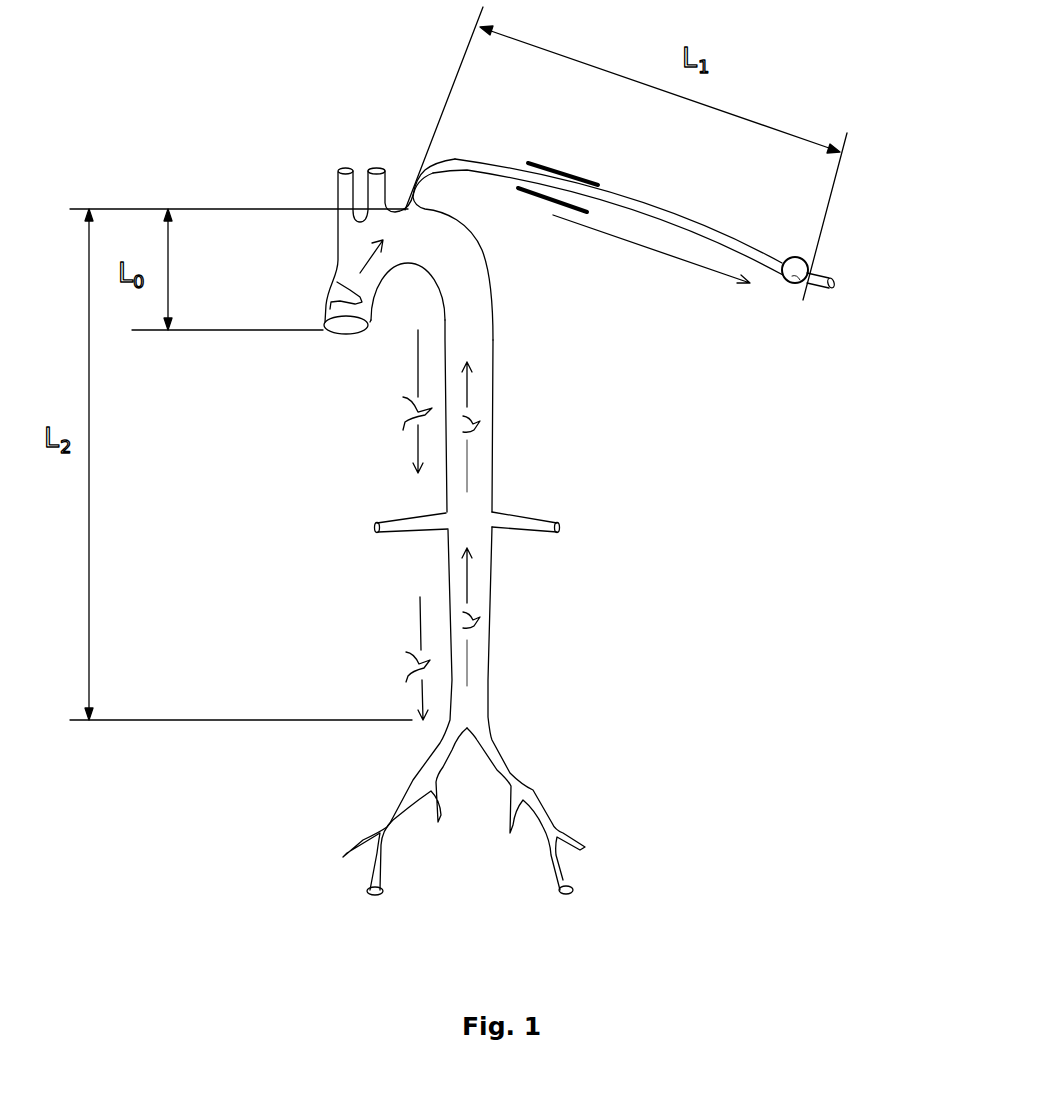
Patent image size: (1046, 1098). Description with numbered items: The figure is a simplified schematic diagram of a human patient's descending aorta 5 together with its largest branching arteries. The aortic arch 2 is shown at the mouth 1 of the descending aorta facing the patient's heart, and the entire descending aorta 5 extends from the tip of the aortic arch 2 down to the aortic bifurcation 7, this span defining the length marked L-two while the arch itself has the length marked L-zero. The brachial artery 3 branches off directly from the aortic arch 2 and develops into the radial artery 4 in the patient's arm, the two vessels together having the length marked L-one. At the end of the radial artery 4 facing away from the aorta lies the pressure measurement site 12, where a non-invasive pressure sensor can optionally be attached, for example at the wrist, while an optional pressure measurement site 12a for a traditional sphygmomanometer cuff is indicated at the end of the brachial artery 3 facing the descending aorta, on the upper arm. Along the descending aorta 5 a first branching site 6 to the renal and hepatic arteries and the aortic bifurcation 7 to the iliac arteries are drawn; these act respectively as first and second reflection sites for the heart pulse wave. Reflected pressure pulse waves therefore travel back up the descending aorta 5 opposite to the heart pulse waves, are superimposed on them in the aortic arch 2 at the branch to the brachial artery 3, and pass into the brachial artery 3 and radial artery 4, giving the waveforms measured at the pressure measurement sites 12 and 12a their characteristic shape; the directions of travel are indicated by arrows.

The mouth of the descending aorta 1 is at (342, 330).
The aortic arch 2 is at (413, 220).
The brachial artery 3 is at (452, 170).
The radial artery 4 is at (687, 227).
The descending aorta 5 is at (483, 387).
The first branching site 6 is at (470, 513).
The aortic bifurcation 7 is at (470, 710).
The pressure measurement site 12 is at (800, 283).
The optional pressure measurement site 12a is at (553, 167).